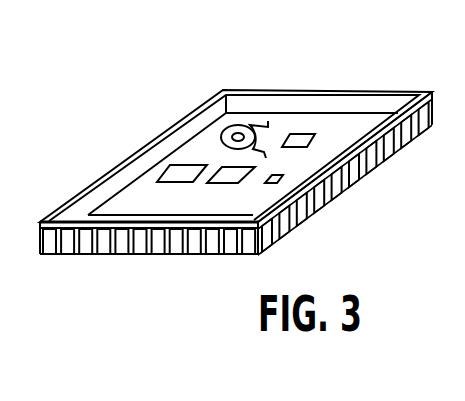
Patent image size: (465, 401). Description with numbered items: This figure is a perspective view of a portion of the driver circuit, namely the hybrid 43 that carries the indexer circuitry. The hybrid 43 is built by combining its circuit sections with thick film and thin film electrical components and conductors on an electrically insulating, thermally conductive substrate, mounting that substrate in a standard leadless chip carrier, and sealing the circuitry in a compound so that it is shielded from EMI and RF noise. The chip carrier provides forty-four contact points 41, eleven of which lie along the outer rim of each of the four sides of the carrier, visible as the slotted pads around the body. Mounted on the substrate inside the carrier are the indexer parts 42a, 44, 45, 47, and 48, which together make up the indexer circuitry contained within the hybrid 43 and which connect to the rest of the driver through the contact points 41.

The contact points 41 is at (418, 128).
The part 42a is at (243, 124).
The hybrid 43 is at (433, 92).
The part 44 is at (300, 138).
The part 45 is at (224, 180).
The part 47 is at (183, 178).
The part 48 is at (282, 178).